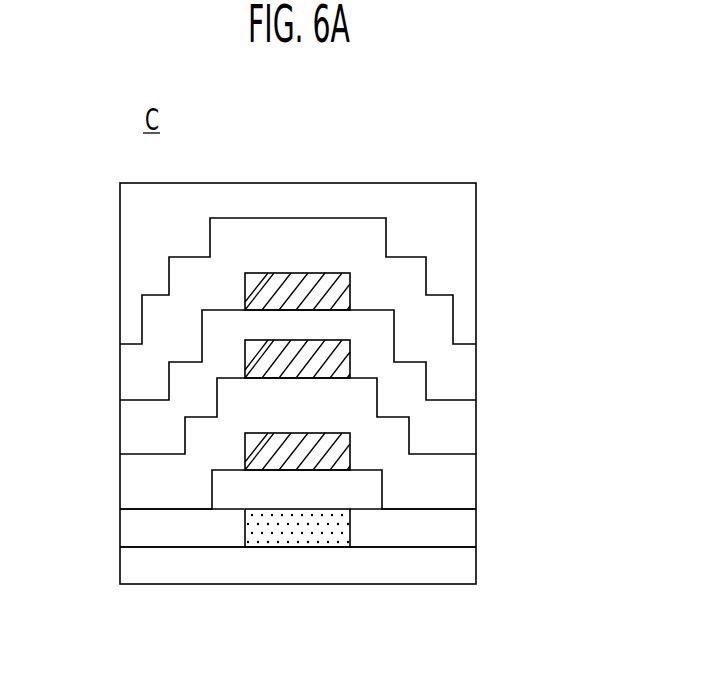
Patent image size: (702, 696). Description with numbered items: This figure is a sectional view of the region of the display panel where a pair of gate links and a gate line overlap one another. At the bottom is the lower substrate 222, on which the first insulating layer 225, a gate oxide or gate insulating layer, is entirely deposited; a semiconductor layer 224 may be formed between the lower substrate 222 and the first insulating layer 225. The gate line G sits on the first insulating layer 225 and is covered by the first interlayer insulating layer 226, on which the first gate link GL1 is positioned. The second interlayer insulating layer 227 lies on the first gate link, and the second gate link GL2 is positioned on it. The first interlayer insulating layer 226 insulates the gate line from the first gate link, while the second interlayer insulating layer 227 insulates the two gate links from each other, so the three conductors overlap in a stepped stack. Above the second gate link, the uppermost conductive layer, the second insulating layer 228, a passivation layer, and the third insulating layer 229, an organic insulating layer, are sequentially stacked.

The lower substrate 222 is at (127, 573).
The semiconductor layer 224 is at (333, 528).
The first insulating layer 225 is at (127, 527).
The first interlayer insulating layer 226 is at (127, 478).
The second interlayer insulating layer 227 is at (127, 428).
The second insulating layer 228 is at (127, 375).
The third insulating layer 229 is at (127, 268).